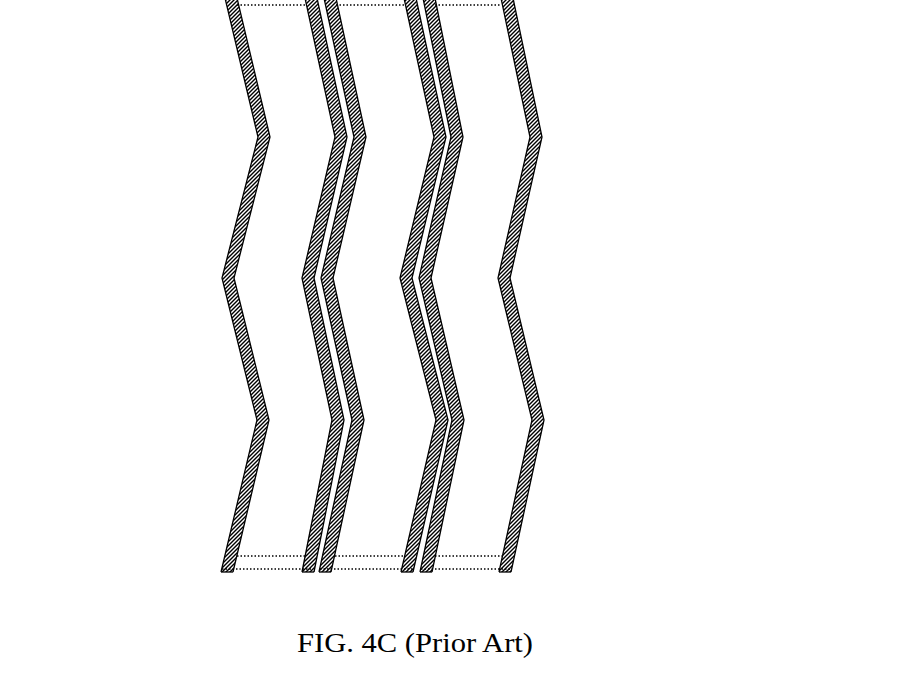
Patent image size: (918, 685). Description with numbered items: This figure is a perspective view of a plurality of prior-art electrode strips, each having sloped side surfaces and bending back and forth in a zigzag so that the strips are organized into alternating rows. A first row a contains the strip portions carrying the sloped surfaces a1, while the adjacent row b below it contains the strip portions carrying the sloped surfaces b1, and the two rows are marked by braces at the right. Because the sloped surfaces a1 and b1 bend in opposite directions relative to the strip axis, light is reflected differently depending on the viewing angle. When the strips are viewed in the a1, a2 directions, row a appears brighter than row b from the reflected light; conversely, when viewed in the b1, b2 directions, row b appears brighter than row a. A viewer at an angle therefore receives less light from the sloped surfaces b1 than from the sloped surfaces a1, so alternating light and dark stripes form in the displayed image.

The sloped surface a1 is at (234, 196).
The sloped surface b1 is at (214, 350).
The viewing direction a2 is at (549, 222).
The viewing direction b2 is at (567, 362).
The row a is at (677, 137).
The row b is at (677, 275).